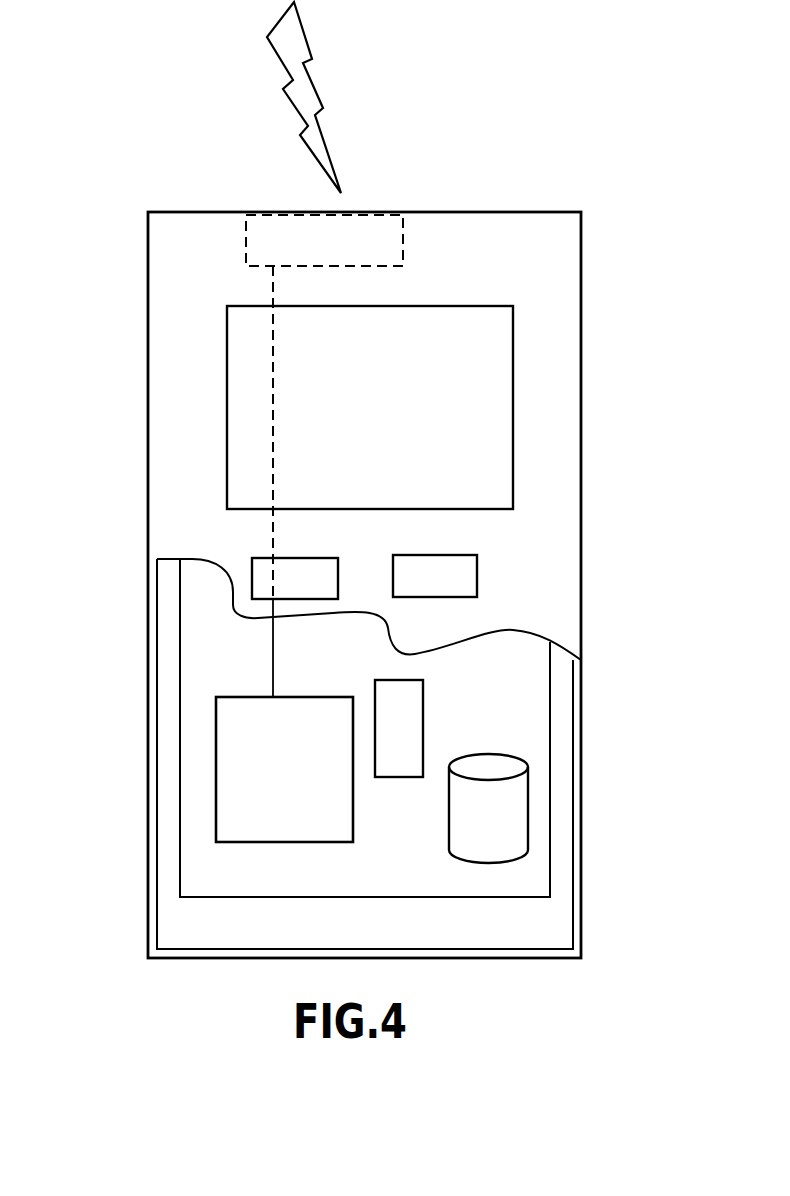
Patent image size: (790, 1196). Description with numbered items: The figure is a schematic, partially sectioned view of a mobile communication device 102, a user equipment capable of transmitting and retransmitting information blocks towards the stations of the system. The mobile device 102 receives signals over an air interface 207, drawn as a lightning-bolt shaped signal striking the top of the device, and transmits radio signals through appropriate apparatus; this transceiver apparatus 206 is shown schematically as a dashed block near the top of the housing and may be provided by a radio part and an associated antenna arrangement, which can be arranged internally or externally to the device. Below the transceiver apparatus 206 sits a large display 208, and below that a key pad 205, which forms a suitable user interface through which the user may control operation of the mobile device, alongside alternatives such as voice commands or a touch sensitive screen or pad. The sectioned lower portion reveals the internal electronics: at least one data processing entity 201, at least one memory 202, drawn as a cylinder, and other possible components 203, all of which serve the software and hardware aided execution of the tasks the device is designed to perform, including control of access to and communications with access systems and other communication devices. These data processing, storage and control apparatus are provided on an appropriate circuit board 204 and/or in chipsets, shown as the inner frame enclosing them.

The communication device 102 is at (147, 292).
The data processing entity 201 is at (233, 771).
The memory 202 is at (517, 815).
The other possible components 203 is at (405, 735).
The circuit board 204 is at (180, 853).
The key pad 205 is at (262, 567).
The transceiver apparatus 206 is at (385, 233).
The air interface 207 is at (325, 76).
The display 208 is at (238, 413).